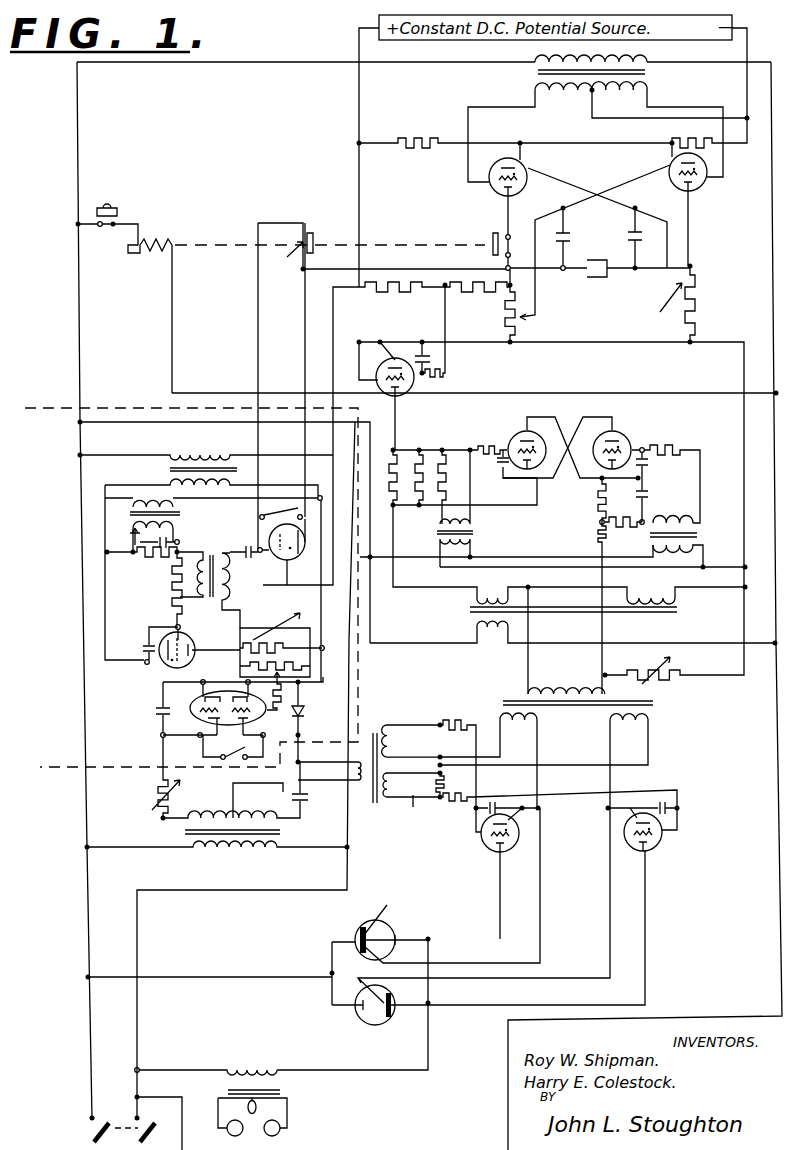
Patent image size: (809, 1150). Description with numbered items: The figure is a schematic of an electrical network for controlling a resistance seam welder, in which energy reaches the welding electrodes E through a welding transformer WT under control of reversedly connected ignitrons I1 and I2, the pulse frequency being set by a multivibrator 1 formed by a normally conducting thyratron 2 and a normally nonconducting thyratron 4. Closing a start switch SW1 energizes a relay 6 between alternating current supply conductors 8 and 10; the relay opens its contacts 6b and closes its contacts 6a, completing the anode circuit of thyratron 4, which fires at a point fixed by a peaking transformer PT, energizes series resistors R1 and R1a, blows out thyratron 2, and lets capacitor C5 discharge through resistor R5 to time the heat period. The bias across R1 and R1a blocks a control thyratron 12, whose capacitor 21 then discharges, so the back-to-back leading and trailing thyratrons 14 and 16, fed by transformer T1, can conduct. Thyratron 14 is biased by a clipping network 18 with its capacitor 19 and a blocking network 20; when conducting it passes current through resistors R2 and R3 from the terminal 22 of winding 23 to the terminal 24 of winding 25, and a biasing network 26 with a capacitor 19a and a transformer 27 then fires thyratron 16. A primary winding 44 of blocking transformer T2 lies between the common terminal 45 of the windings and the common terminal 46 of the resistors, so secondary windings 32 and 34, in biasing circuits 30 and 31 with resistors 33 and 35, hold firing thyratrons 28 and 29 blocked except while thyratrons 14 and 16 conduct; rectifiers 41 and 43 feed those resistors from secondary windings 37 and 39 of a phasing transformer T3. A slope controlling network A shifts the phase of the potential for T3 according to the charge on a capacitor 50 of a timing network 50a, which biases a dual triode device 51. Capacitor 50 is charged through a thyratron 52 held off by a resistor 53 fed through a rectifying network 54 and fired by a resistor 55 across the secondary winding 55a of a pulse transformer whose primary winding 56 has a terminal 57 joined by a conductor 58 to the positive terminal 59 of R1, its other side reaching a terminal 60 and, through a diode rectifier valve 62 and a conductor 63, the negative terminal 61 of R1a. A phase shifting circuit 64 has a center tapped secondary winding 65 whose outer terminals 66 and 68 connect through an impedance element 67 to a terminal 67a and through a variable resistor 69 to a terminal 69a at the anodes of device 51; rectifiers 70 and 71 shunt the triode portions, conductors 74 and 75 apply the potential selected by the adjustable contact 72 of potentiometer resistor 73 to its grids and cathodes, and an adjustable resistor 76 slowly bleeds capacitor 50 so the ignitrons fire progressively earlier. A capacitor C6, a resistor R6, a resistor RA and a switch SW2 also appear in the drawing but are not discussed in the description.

The frequency controlling multivibrator 1 is at (431, 189).
The normally conducting thyratron 2 is at (707, 184).
The normally nonconducting thyratron 4 is at (528, 186).
The relay 6 is at (250, 242).
The relay contacts 6a is at (498, 236).
The relay contacts 6b is at (289, 258).
The alternating current supply conductor 8 is at (80, 140).
The alternating current supply conductor 10 is at (372, 853).
The control thyratron 12 is at (405, 388).
The leading thyratron 14 is at (515, 434).
The trailing thyratron 16 is at (626, 436).
The clipping network 18 is at (488, 493).
The capacitor 19 is at (455, 446).
The capacitor 19a is at (650, 500).
The blocking network 20 is at (406, 514).
The capacitor 21 is at (412, 450).
The terminal 22 is at (472, 592).
The winding 23 is at (494, 592).
The terminal 24 is at (746, 592).
The winding 25 is at (659, 592).
The biasing network 26 is at (697, 437).
The transformer 27 is at (697, 535).
The firing thyratron 28 is at (486, 847).
The firing thyratron 29 is at (663, 845).
The biasing circuit 30 is at (463, 712).
The biasing circuit 31 is at (664, 750).
The secondary winding 32 is at (508, 733).
The resistor 33 is at (458, 764).
The secondary winding 34 is at (620, 733).
The resistor 35 is at (556, 790).
The secondary winding 37 is at (412, 741).
The secondary winding 39 is at (413, 785).
The rectifier 41 is at (427, 717).
The rectifier 43 is at (414, 800).
The primary winding 44 is at (586, 688).
The common terminal 45 is at (530, 588).
The common terminal 46 is at (642, 668).
The capacitor 50 is at (282, 652).
The timing network 50a is at (233, 650).
The dual triode vacuum discharge device 51 is at (192, 702).
The thyratron 52 is at (187, 625).
The resistor 53 is at (140, 556).
The half wave rectifying and smoothing network 54 is at (180, 532).
The second resistor 55 is at (174, 576).
The secondary winding 55a is at (200, 583).
The primary winding 56 is at (246, 545).
The terminal 57 is at (258, 592).
The conductor 58 is at (362, 372).
The positive terminal 59 is at (362, 289).
The terminal 60 is at (272, 557).
The negative terminal 61 is at (510, 283).
The diode rectifier valve 62 is at (302, 562).
The conductor 63 is at (312, 432).
The phase shifting circuit 64 is at (216, 863).
The center tapped secondary winding 65 is at (238, 815).
The outer end terminal 66 is at (303, 821).
The impedance element 67 is at (318, 786).
The terminal 67a is at (303, 735).
The outer end terminal 68 is at (160, 818).
The variable resistor 69 is at (158, 781).
The terminal 69a is at (160, 736).
The first rectifier 70 is at (158, 709).
The second rectifier 71 is at (304, 712).
The adjustable contact 72 is at (274, 673).
The potentiometer resistor 73 is at (240, 667).
The conductor 74 is at (317, 688).
The conductor 75 is at (366, 668).
The adjustable resistor 76 is at (188, 828).
The slope controlling network A is at (130, 406).
The capacitor C5 is at (571, 236).
The capacitor C6 is at (630, 226).
The welding electrodes E is at (242, 1138).
The ignitron I1 is at (387, 905).
The ignitron I2 is at (372, 1030).
The peaking transformer PT is at (646, 73).
The resistor R1 is at (403, 298).
The resistor R1a is at (479, 298).
The resistor R2 is at (600, 501).
The resistor R3 is at (600, 538).
The resistor R5 is at (542, 302).
The resistor R6 is at (660, 310).
The resistor RA is at (680, 678).
The start switch SW1 is at (115, 205).
The switch SW2 is at (260, 515).
The transformer T1 is at (668, 615).
The blocking transformer T2 is at (660, 705).
The phasing transformer T3 is at (370, 805).
The welding transformer WT is at (282, 1091).